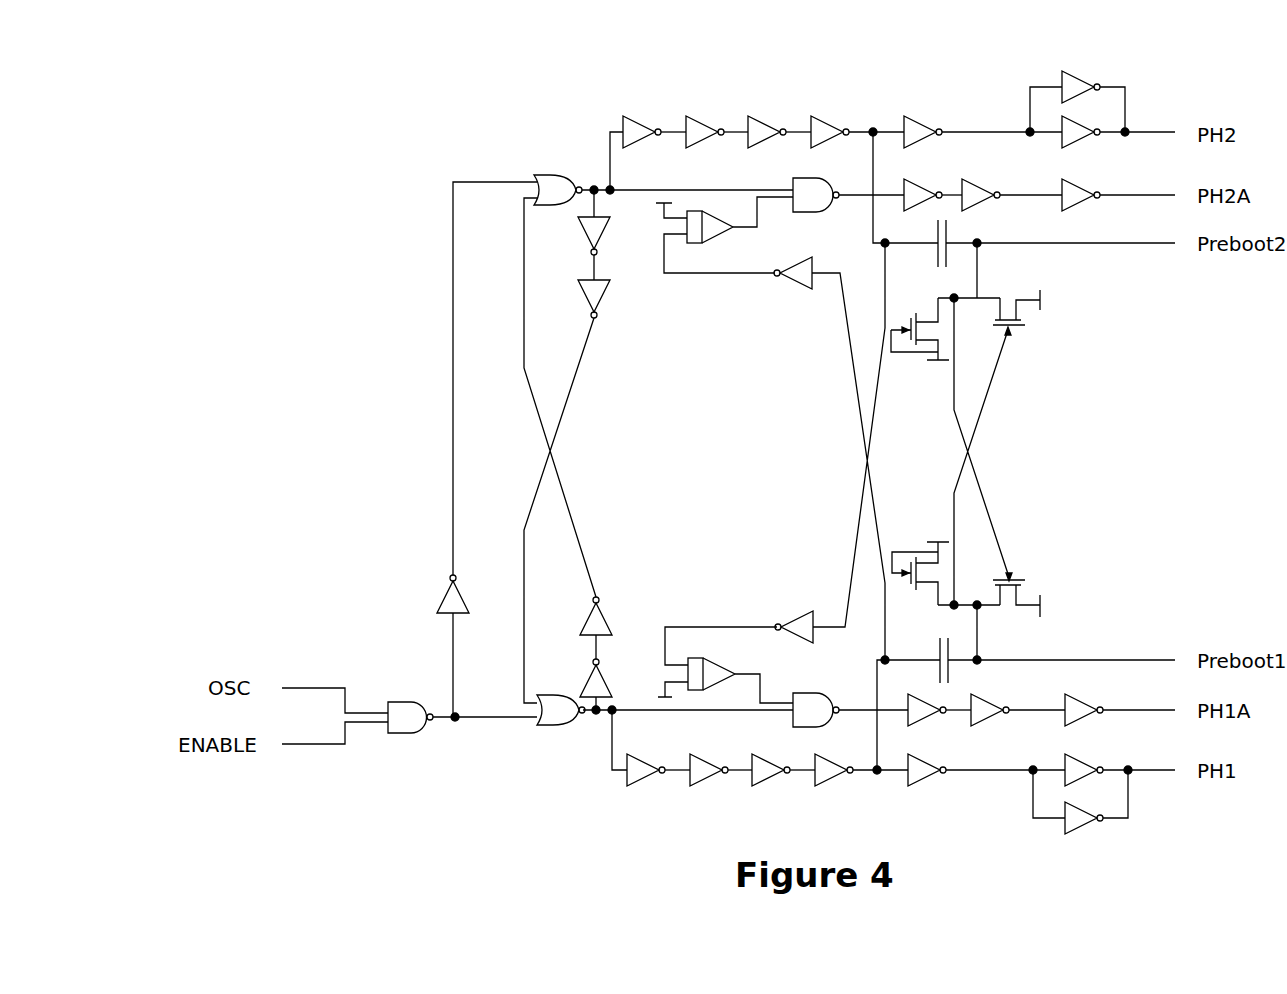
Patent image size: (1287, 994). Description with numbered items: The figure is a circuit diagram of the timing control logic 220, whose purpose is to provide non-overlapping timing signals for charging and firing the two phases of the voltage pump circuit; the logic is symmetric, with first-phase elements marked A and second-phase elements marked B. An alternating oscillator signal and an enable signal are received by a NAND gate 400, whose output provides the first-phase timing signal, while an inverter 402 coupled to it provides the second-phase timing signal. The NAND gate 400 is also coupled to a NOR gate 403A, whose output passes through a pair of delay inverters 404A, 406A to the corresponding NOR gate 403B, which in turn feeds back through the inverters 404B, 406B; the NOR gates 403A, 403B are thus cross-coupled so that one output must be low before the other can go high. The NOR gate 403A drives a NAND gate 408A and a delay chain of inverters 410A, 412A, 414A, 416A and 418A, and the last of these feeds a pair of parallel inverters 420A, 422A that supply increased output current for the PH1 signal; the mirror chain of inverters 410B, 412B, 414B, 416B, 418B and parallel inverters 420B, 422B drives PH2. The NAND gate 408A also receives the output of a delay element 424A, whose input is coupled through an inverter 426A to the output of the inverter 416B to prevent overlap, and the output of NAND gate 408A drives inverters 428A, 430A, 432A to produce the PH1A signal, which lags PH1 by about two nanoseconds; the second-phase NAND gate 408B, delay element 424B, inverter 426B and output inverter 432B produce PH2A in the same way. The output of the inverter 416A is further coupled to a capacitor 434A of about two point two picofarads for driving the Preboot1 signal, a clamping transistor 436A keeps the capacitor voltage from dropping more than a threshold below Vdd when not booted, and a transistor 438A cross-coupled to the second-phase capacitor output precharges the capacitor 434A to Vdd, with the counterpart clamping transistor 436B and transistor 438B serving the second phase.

The timing control logic 220 is at (352, 120).
The NAND gate 400 is at (400, 700).
The inverter 402 is at (440, 601).
The NOR gate 403A is at (549, 730).
The NOR gate 403B is at (556, 176).
The delay inverter 404A is at (588, 672).
The delay inverter 404B is at (598, 248).
The delay inverter 406A is at (590, 611).
The delay inverter 406B is at (601, 303).
The NAND gate 408A is at (820, 692).
The NAND gate 408B is at (827, 182).
The inverter 410A is at (642, 782).
The inverter 410B is at (630, 114).
The inverter 412A is at (708, 782).
The inverter 412B is at (696, 114).
The inverter 414A is at (768, 782).
The inverter 414B is at (755, 114).
The inverter 416A is at (830, 782).
The inverter 416B is at (820, 114).
The inverter 418A is at (925, 783).
The inverter 418B is at (917, 118).
The inverter 420A is at (1090, 762).
The inverter 420B is at (1082, 142).
The inverter 422A is at (1080, 832).
The inverter 422B is at (1077, 76).
The delay element 424A is at (721, 650).
The delay element 424B is at (723, 230).
The inverter 426A is at (798, 608).
The inverter 426B is at (808, 261).
The inverter 428A is at (920, 183).
The inverter 430A is at (979, 183).
The inverter 432A is at (1088, 702).
The inverter 432B is at (1080, 207).
The capacitor 434A is at (937, 642).
The clamping transistor 436A is at (921, 560).
The clamping transistor 436B is at (921, 348).
The transistor 438A is at (1021, 574).
The transistor 438B is at (1018, 328).